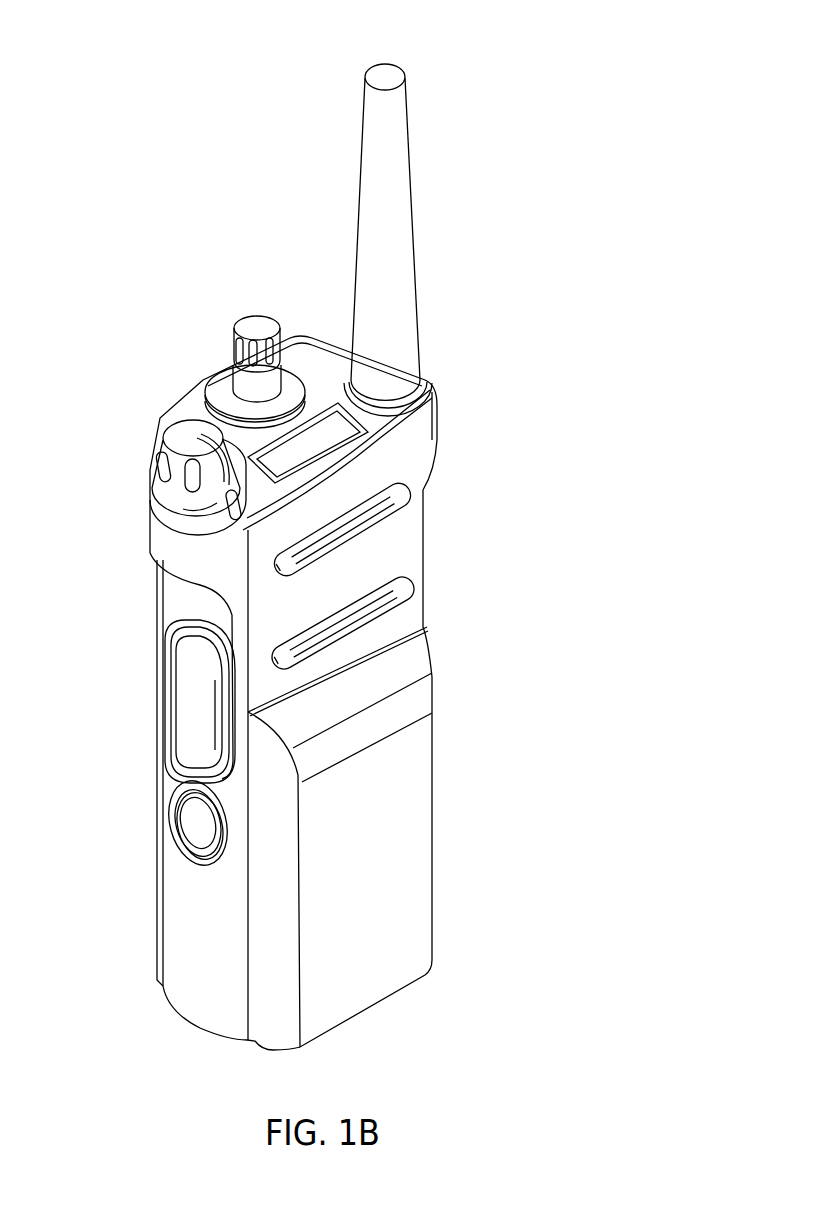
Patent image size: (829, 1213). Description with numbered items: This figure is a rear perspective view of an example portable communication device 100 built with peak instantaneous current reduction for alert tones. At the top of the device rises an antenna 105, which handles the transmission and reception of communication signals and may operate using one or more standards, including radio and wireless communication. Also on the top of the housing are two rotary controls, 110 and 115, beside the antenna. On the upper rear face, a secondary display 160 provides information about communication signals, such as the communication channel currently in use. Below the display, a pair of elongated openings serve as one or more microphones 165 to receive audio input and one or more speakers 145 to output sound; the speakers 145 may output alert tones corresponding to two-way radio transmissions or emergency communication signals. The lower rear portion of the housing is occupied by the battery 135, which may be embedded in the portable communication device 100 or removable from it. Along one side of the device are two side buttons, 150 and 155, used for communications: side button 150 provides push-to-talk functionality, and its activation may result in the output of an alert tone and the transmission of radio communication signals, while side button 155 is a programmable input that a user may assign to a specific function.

The portable communication device 100 is at (126, 222).
The antenna 105 is at (403, 242).
The volume/on-off knob 110 is at (180, 432).
The channel selector knob 115 is at (246, 336).
The battery 135 is at (413, 817).
The speakers 145 is at (410, 598).
The side button 150 is at (187, 700).
The side button 155 is at (187, 824).
The secondary display 160 is at (342, 432).
The microphones 165 is at (410, 503).